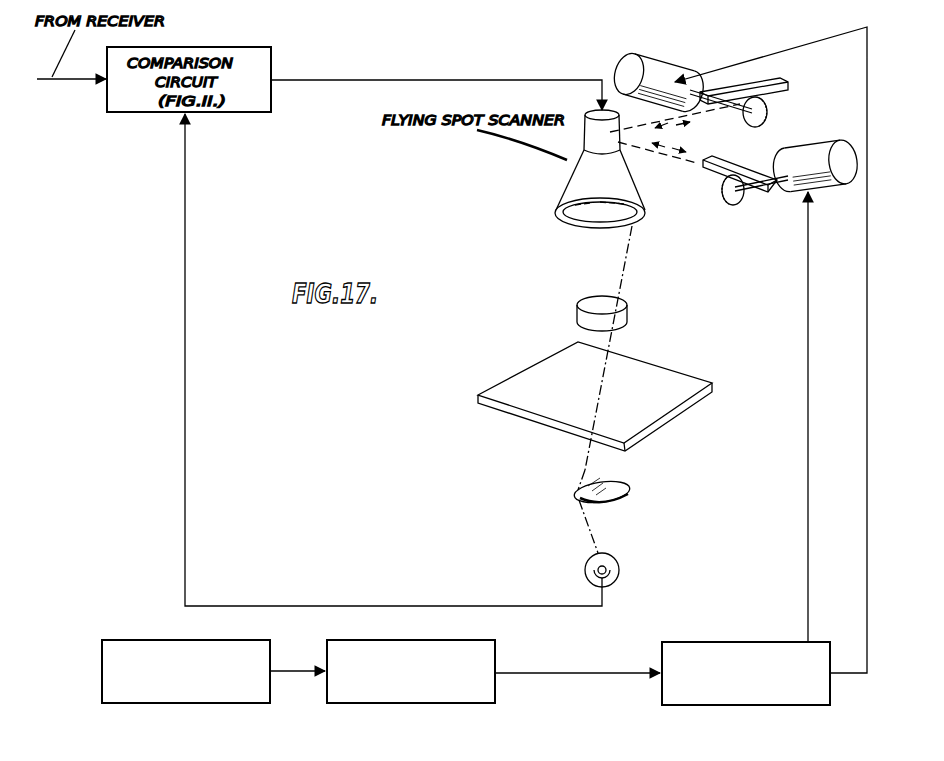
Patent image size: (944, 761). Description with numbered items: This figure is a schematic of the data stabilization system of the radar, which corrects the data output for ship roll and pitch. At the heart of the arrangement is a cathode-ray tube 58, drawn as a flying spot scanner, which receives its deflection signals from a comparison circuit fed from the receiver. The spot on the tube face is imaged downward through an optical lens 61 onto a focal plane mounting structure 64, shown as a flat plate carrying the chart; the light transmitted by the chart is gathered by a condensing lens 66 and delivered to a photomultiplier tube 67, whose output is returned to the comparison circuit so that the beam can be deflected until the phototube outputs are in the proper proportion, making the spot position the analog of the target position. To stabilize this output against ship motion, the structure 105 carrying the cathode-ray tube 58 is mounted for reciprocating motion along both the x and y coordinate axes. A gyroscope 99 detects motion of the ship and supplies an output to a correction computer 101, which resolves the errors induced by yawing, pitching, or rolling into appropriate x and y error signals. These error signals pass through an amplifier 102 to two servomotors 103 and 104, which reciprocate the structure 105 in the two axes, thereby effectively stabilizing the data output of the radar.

The cathode-ray tube 58 is at (565, 188).
The optical lens 61 is at (625, 300).
The focal plane mounting structure 64 is at (533, 418).
The condensing lens 66 is at (617, 500).
The photomultiplier tube 67 is at (620, 570).
The gyroscope 99 is at (233, 703).
The correction computer 101 is at (457, 703).
The amplifier 102 is at (795, 705).
The servomotor 103 is at (670, 65).
The servomotor 104 is at (805, 148).
The structure 105 is at (642, 157).